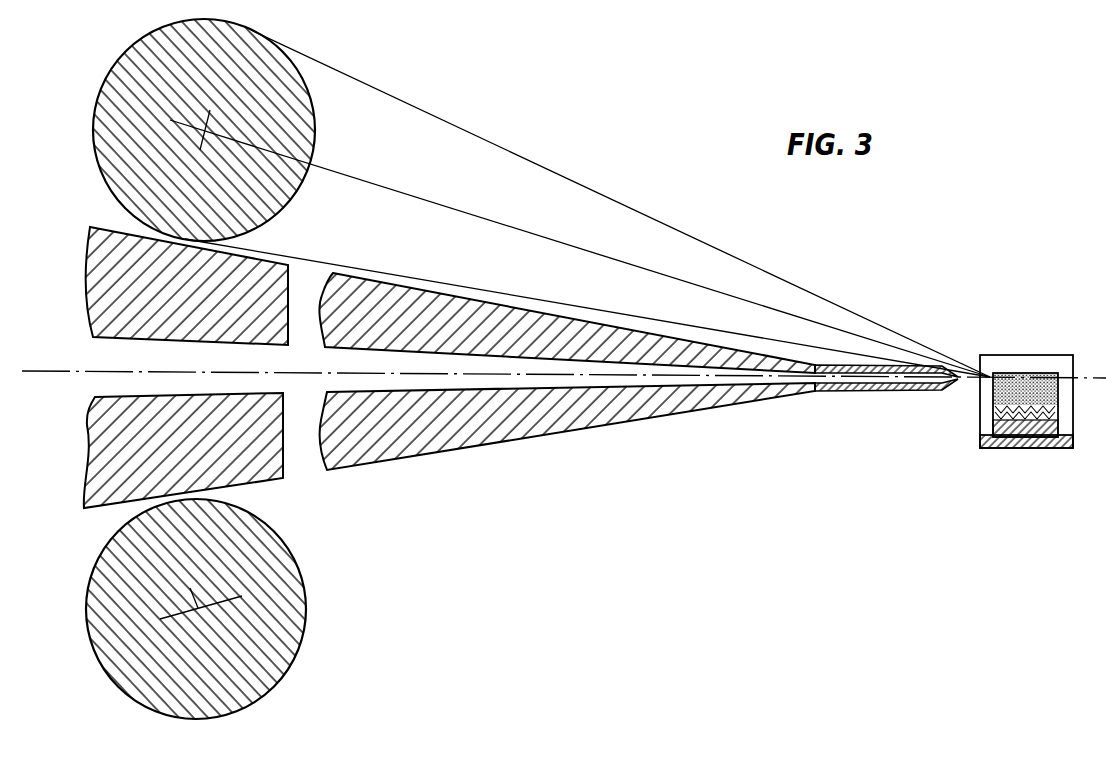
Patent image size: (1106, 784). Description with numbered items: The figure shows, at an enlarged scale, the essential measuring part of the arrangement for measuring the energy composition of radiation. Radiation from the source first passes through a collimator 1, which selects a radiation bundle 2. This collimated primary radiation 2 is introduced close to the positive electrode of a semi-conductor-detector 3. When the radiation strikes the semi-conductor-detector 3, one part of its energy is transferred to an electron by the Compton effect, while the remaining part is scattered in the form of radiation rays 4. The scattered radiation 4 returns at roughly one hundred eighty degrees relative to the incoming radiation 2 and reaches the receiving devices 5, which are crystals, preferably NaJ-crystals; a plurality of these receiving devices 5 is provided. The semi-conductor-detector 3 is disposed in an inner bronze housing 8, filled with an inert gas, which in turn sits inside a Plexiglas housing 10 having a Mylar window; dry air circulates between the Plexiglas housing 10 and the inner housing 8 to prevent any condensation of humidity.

The collimator 1 is at (387, 430).
The radiation bundle 2 is at (44, 368).
The semi-conductor-detector 3 is at (1073, 422).
The scattered radiation rays 4 is at (443, 205).
The receiving device 5 is at (281, 105).
The bronze housing 8 is at (993, 410).
The Plexiglas housing 10 is at (1074, 363).